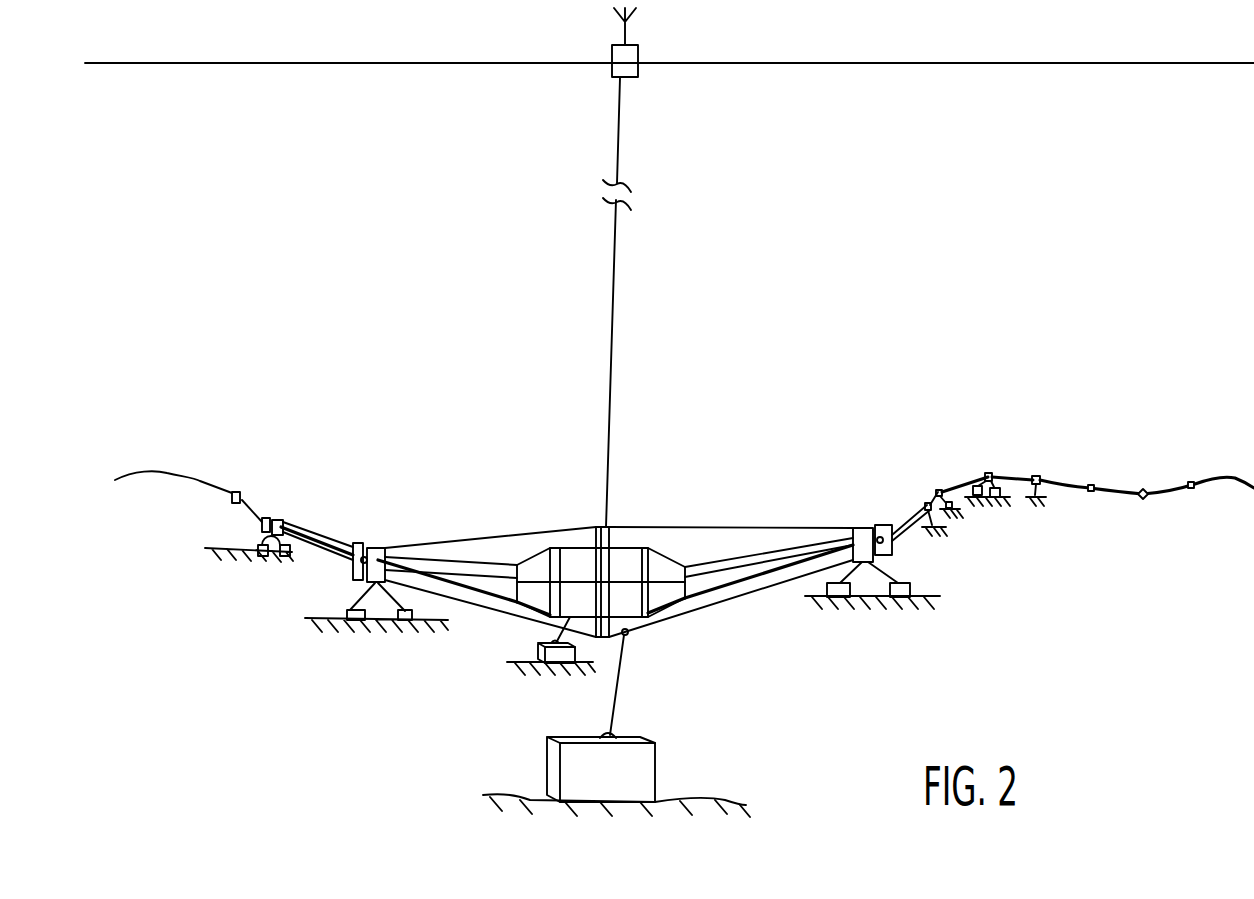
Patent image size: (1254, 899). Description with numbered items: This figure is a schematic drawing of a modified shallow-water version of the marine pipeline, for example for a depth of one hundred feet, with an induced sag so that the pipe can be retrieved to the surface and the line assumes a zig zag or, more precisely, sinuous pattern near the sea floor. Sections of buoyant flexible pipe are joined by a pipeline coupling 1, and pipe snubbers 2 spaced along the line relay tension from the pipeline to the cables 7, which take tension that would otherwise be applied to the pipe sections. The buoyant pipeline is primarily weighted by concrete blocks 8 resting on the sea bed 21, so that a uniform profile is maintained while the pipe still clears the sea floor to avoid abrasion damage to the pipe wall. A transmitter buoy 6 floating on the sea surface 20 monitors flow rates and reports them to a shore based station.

The pipeline coupling 1 is at (623, 542).
The pipe snubber 2 is at (364, 544).
The transmitter buoy 6 is at (638, 50).
The cable 7 is at (480, 570).
The concrete block 8 is at (656, 763).
The sea surface 20 is at (896, 63).
The sea bed 21 is at (386, 623).